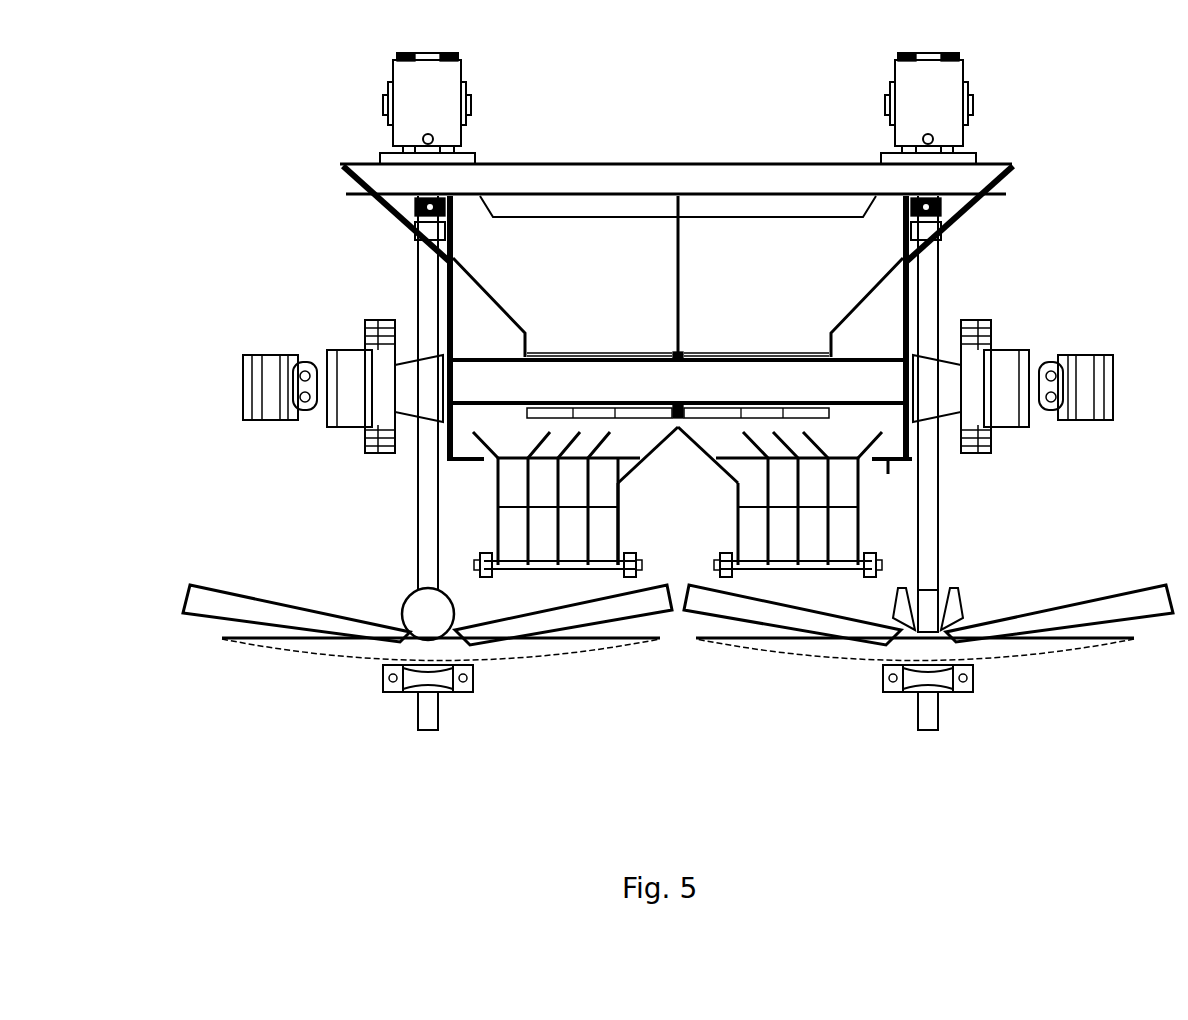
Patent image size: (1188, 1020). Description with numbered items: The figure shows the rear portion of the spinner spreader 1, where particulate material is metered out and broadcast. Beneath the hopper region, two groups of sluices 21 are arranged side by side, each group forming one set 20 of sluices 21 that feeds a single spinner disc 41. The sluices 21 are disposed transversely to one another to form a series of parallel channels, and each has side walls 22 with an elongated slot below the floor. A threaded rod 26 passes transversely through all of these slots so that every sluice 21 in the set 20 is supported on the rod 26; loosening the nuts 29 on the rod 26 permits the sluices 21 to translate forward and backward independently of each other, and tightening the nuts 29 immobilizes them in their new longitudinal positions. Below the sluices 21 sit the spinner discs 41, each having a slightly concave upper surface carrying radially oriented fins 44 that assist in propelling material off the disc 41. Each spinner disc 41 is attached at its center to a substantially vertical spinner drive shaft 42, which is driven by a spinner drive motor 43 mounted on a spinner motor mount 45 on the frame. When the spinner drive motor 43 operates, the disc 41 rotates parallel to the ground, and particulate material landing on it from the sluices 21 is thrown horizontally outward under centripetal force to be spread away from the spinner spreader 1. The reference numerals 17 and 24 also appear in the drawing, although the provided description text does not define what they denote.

The spinner spreader 1 is at (230, 213).
The actuator 17 is at (1108, 380).
The set of sluices 20 is at (858, 530).
The sluice 21 is at (752, 527).
The side wall 22 is at (860, 548).
The hopper 24 is at (843, 442).
The threaded rod 26 is at (752, 562).
The nut 29 is at (718, 575).
The spinner disc 41 is at (1013, 650).
The spinner drive shaft 42 is at (932, 287).
The spinner drive motor 43 is at (946, 100).
The fin 44 is at (1112, 605).
The spinner motor mount 45 is at (972, 172).